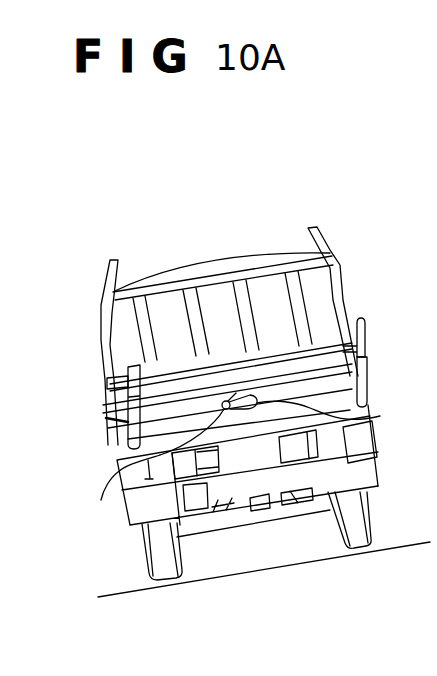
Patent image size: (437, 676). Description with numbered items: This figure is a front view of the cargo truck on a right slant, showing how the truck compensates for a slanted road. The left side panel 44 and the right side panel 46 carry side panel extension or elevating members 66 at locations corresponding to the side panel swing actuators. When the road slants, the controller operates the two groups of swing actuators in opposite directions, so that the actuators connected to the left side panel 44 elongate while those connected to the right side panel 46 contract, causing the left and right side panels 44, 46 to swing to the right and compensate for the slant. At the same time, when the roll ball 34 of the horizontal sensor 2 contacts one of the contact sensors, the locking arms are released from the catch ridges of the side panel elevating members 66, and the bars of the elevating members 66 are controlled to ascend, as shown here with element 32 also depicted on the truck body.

The tensioning strap with eyelet 2 is at (236, 393).
The rear body rail 32 is at (366, 418).
The strap end 34 is at (101, 500).
The left support bracket 44 is at (124, 420).
The right support bracket 46 is at (365, 377).
The hinge member 66 is at (107, 384).